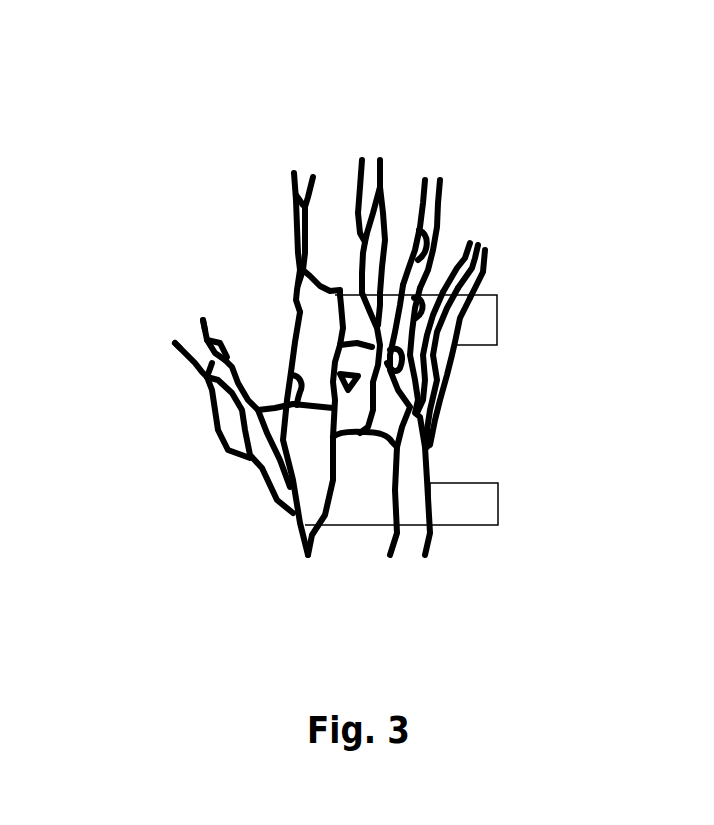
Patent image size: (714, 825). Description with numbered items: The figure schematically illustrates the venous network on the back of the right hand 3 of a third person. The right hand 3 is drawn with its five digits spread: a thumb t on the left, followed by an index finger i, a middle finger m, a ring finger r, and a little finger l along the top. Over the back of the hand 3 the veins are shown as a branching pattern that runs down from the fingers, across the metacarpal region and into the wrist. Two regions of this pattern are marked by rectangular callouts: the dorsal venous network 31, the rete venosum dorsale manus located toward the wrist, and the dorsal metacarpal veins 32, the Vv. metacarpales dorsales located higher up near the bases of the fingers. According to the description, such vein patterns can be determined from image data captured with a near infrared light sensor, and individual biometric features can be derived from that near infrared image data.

The right hand 3 is at (128, 437).
The index finger i is at (268, 133).
The middle finger m is at (372, 100).
The ring finger r is at (447, 128).
The little finger l is at (507, 212).
The thumb t is at (155, 288).
The dorsal venous network 31 is at (498, 503).
The dorsal metacarpal veins 32 is at (382, 326).